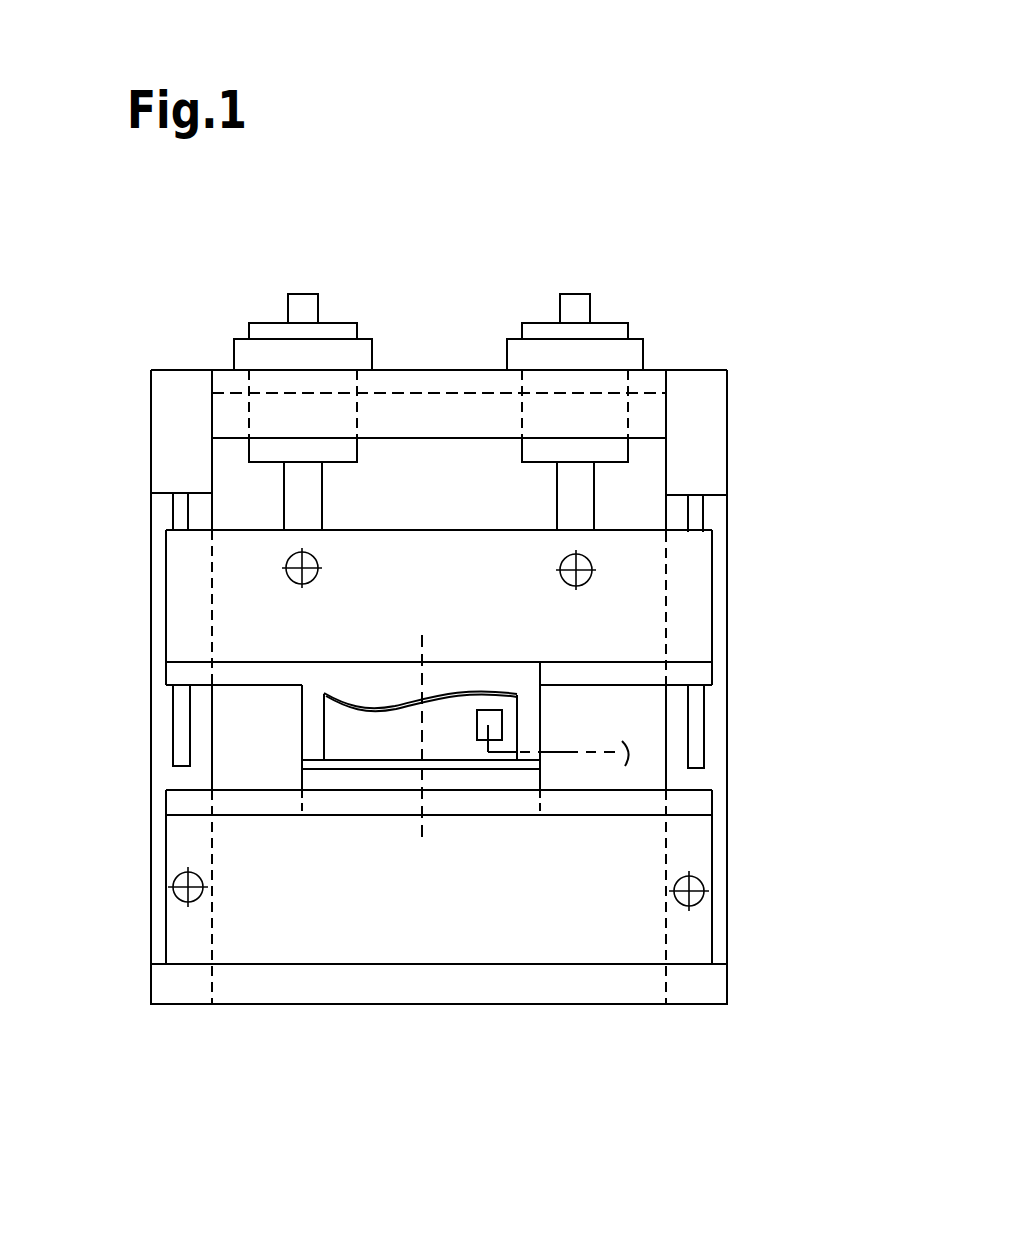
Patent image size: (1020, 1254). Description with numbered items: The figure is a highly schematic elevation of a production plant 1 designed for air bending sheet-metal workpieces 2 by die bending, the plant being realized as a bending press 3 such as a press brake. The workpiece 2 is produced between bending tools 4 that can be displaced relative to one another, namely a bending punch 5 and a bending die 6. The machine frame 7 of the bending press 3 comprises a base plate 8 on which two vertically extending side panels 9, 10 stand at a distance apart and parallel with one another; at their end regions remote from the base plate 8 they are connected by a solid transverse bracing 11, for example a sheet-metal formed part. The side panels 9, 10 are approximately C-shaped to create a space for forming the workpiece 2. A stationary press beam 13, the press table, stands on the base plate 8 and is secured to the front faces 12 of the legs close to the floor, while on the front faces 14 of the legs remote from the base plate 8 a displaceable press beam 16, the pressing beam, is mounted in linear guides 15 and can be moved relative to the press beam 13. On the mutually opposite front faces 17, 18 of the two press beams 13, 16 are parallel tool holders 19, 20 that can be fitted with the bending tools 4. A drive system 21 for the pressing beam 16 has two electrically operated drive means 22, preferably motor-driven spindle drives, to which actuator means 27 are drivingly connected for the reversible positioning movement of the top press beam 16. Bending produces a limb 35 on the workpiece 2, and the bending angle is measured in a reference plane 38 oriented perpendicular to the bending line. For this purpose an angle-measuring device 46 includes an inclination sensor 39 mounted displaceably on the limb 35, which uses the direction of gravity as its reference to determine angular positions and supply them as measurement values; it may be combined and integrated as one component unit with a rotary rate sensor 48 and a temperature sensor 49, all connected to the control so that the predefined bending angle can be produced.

The production plant 1 is at (645, 195).
The workpiece 2 is at (338, 735).
The bending press 3 is at (688, 330).
The bending tools 4 is at (294, 820).
The bending punch 5 is at (315, 700).
The bending die 6 is at (338, 780).
The machine frame 7 is at (118, 551).
The base plate 8 is at (410, 988).
The side panel 9 is at (165, 739).
The side panel 10 is at (717, 549).
The transverse bracing 11 is at (430, 410).
The front faces 12 is at (160, 870).
The stationary press beam 13 is at (683, 857).
The front faces 14 is at (718, 580).
The linear guides 15 is at (696, 510).
The press beam 16 is at (687, 618).
The front face 17 is at (200, 795).
The front face 18 is at (200, 659).
The tool holder 19 is at (265, 802).
The tool holder 20 is at (240, 668).
The drive system 21 is at (210, 282).
The drive means 22 is at (345, 331).
The actuator means 27 is at (577, 490).
The limb 35 is at (368, 730).
The reference plane 38 is at (430, 838).
The inclination sensor 39 is at (497, 718).
The angle-measuring device 46 is at (520, 732).
The rotary rate sensor 48 is at (665, 718).
The temperature sensor 49 is at (685, 718).